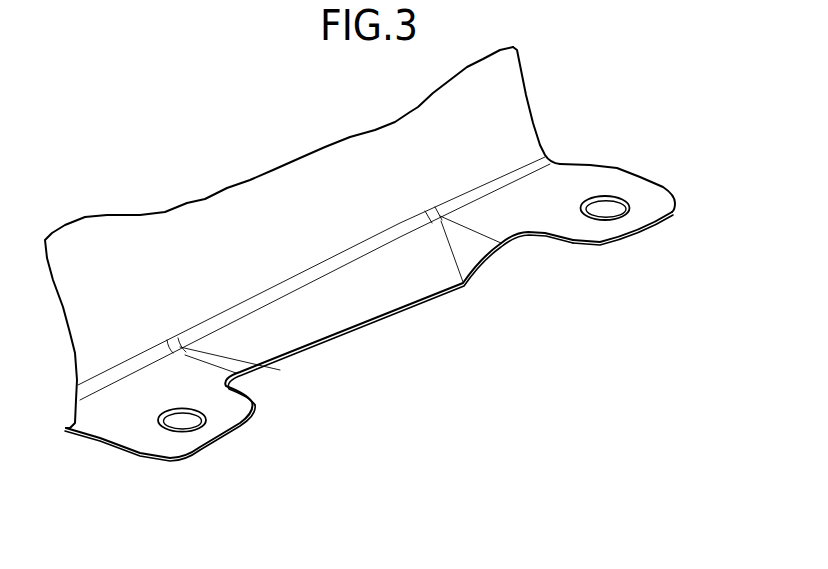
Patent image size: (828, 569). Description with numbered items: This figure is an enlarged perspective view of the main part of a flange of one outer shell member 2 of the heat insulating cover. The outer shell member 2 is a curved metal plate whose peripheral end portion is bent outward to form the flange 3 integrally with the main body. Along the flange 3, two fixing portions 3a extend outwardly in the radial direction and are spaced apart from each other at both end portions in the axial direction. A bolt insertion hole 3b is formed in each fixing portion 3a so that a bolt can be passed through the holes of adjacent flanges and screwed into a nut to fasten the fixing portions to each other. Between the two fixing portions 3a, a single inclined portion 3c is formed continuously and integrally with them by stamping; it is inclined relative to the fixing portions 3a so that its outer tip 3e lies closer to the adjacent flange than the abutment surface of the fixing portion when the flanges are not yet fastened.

The outer shell member 2 is at (505, 92).
The flange 3 is at (387, 330).
The fixing portion 3a is at (133, 407).
The bolt insertion hole 3b is at (608, 208).
The inclined portion 3c is at (413, 278).
The tip 3e is at (350, 343).